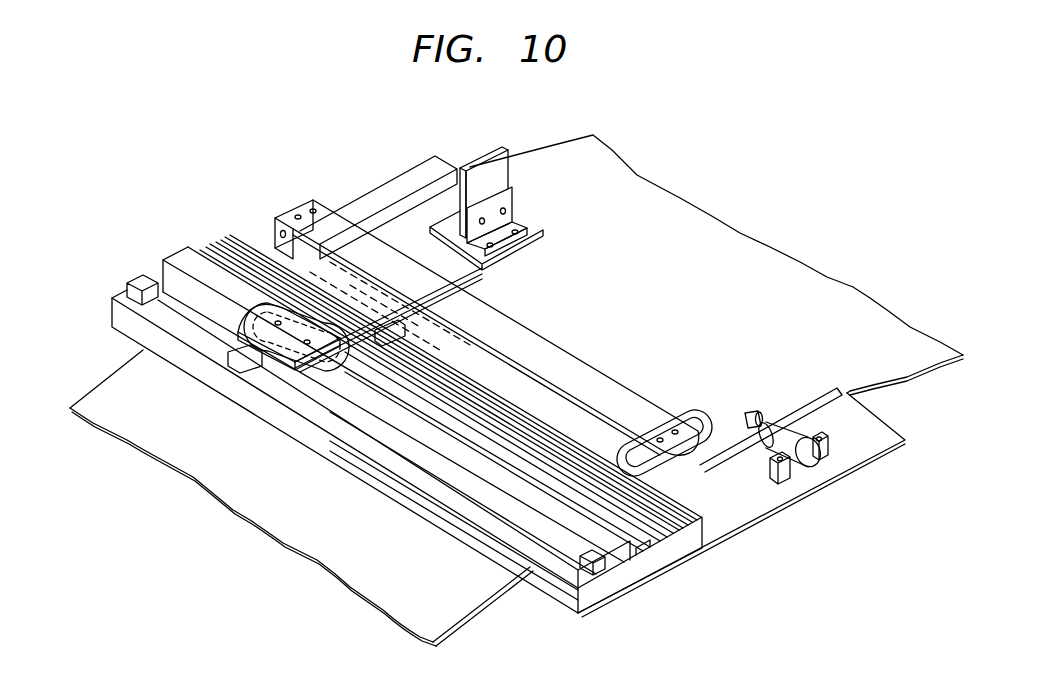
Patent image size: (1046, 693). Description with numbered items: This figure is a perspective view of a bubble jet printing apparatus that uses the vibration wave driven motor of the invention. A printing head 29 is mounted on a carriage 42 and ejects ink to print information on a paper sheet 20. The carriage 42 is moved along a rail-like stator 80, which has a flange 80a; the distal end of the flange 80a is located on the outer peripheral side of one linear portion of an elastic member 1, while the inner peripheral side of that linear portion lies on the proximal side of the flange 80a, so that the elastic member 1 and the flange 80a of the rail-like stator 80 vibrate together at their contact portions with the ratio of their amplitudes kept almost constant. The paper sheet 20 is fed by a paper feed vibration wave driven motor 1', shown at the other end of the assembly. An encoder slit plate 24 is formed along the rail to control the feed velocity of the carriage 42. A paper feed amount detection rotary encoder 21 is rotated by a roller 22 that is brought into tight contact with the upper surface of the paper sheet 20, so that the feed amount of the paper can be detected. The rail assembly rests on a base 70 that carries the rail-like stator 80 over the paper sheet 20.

The elastic member 1 is at (316, 371).
The paper feed vibration wave driven motor 1' is at (664, 412).
The paper sheet 20 is at (681, 200).
The paper feed amount detection rotary encoder 21 is at (808, 460).
The roller 22 is at (748, 412).
The encoder slit plate 24 is at (557, 557).
The printing head 29 is at (482, 170).
The carriage 42 is at (463, 271).
The guide rail base 70 is at (703, 545).
The rail-like stator 80 is at (637, 557).
The flange 80a is at (693, 527).